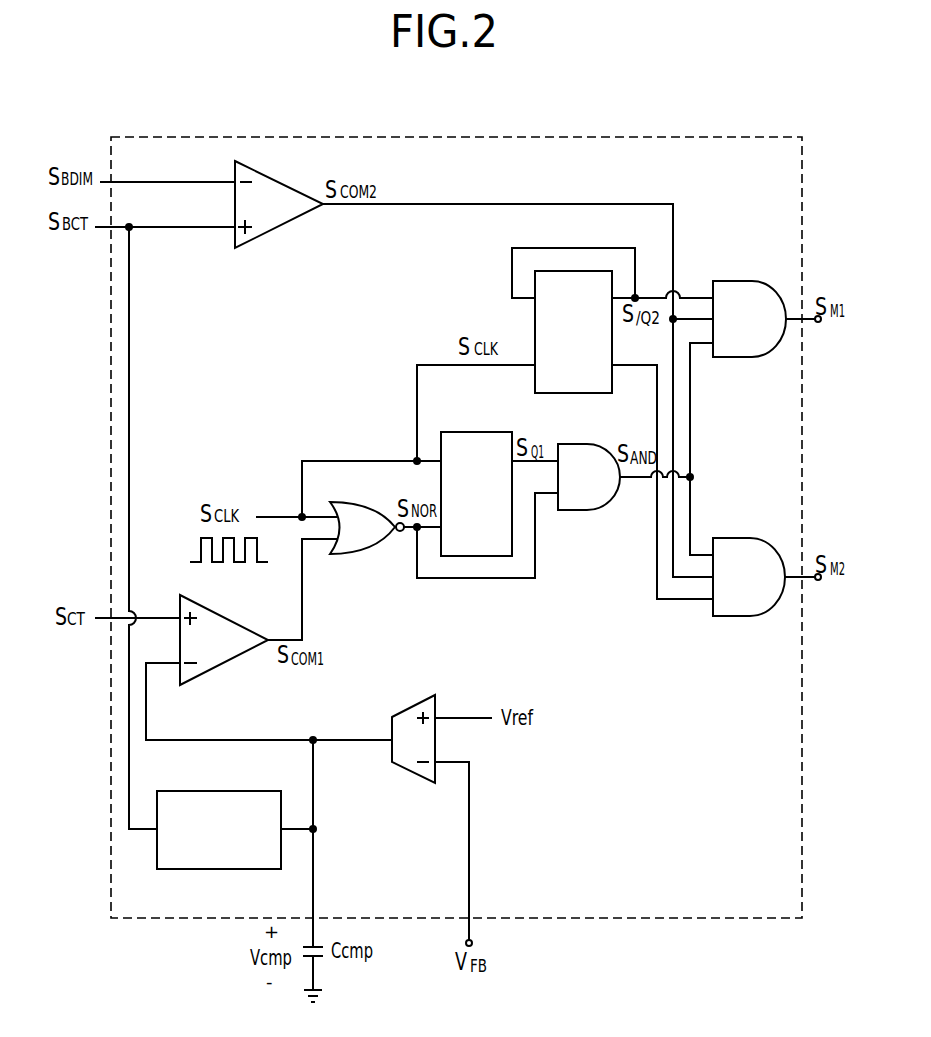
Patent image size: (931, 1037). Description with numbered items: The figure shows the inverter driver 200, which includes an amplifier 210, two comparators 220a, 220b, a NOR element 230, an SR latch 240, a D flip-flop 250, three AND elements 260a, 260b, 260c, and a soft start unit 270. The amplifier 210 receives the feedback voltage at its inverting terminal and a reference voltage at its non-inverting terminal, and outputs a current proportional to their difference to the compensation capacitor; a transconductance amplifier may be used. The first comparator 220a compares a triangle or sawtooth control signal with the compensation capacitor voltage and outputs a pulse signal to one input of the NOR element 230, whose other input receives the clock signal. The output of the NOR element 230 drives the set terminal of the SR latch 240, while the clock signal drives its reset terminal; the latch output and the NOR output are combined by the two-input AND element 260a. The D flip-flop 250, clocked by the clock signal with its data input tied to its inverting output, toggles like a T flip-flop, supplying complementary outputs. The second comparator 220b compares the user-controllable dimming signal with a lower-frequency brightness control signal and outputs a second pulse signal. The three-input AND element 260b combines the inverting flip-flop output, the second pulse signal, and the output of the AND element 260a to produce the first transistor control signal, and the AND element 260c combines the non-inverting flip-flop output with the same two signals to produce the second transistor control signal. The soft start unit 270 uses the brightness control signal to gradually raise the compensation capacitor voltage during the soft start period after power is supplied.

The inverter driver 200 is at (583, 136).
The amplifier 210 is at (412, 777).
The comparator 220a is at (225, 663).
The comparator 220b is at (282, 228).
The NOR element 230 is at (347, 557).
The SR latch 240 is at (472, 431).
The D flip-flop 250 is at (572, 394).
The AND element 260a is at (572, 512).
The AND element 260b is at (733, 280).
The AND element 260c is at (735, 537).
The soft start unit 270 is at (218, 870).